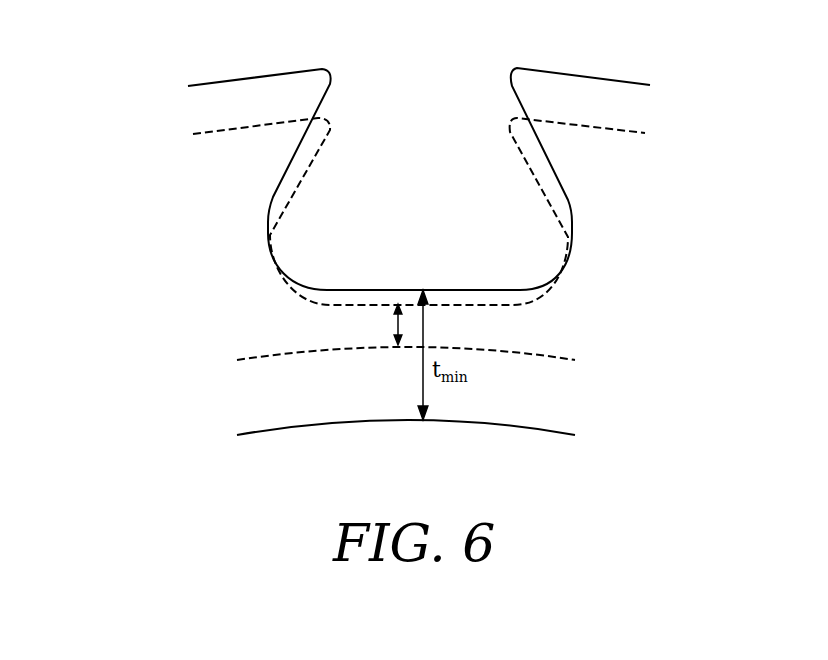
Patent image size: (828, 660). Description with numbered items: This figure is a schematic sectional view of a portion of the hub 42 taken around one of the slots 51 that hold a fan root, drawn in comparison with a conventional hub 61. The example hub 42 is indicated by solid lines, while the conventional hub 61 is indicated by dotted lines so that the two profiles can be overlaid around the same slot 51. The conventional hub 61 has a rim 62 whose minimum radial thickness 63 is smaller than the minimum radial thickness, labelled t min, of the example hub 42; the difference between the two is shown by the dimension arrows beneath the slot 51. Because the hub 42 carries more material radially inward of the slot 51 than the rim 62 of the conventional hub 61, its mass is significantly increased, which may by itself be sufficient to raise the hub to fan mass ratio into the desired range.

The hub 42 is at (218, 80).
The conventional hub 61 is at (218, 130).
The slot 51 is at (422, 240).
The rim 62 is at (475, 338).
The minimum radial thickness 63 is at (397, 322).